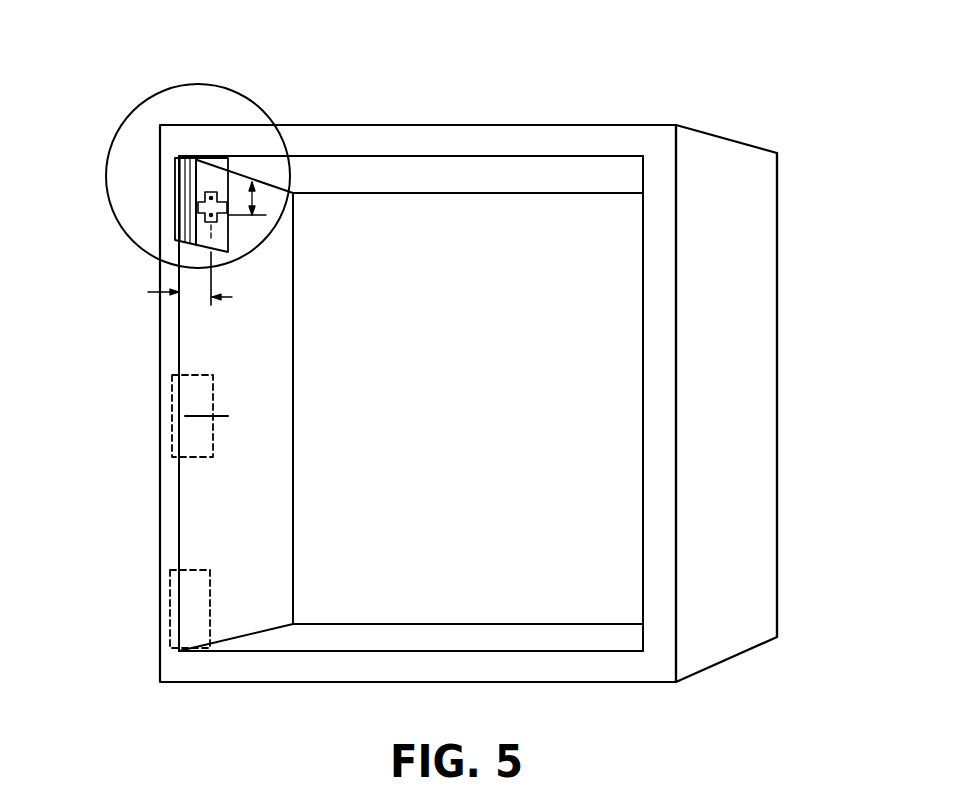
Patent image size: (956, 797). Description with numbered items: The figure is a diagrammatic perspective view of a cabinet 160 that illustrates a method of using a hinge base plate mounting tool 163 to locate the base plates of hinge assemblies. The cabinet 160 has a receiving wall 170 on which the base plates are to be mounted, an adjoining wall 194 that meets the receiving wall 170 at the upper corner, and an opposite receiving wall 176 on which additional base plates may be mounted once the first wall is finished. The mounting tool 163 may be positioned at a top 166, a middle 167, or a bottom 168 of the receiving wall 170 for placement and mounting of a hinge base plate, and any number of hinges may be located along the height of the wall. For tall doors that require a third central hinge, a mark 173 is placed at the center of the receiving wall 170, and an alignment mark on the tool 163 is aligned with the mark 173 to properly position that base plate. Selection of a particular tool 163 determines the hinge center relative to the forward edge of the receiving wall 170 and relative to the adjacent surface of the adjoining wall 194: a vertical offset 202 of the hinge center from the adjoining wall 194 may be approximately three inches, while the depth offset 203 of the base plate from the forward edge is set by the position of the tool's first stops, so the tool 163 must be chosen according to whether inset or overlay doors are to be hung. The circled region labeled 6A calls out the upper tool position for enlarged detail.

The cabinet 160 is at (514, 347).
The adjoining wall 194 is at (402, 138).
The opposite receiving wall 176 is at (740, 448).
The receiving wall 170 is at (411, 403).
The hinge base plate mounting tool 163 is at (125, 405).
The top 166 is at (122, 276).
The middle 167 is at (103, 426).
The bottom 168 is at (120, 621).
The mark 173 is at (198, 415).
The vertical offset 202 is at (256, 203).
The depth offset 203 is at (232, 297).
The detail view region (FIG. 6A) 6A is at (254, 102).